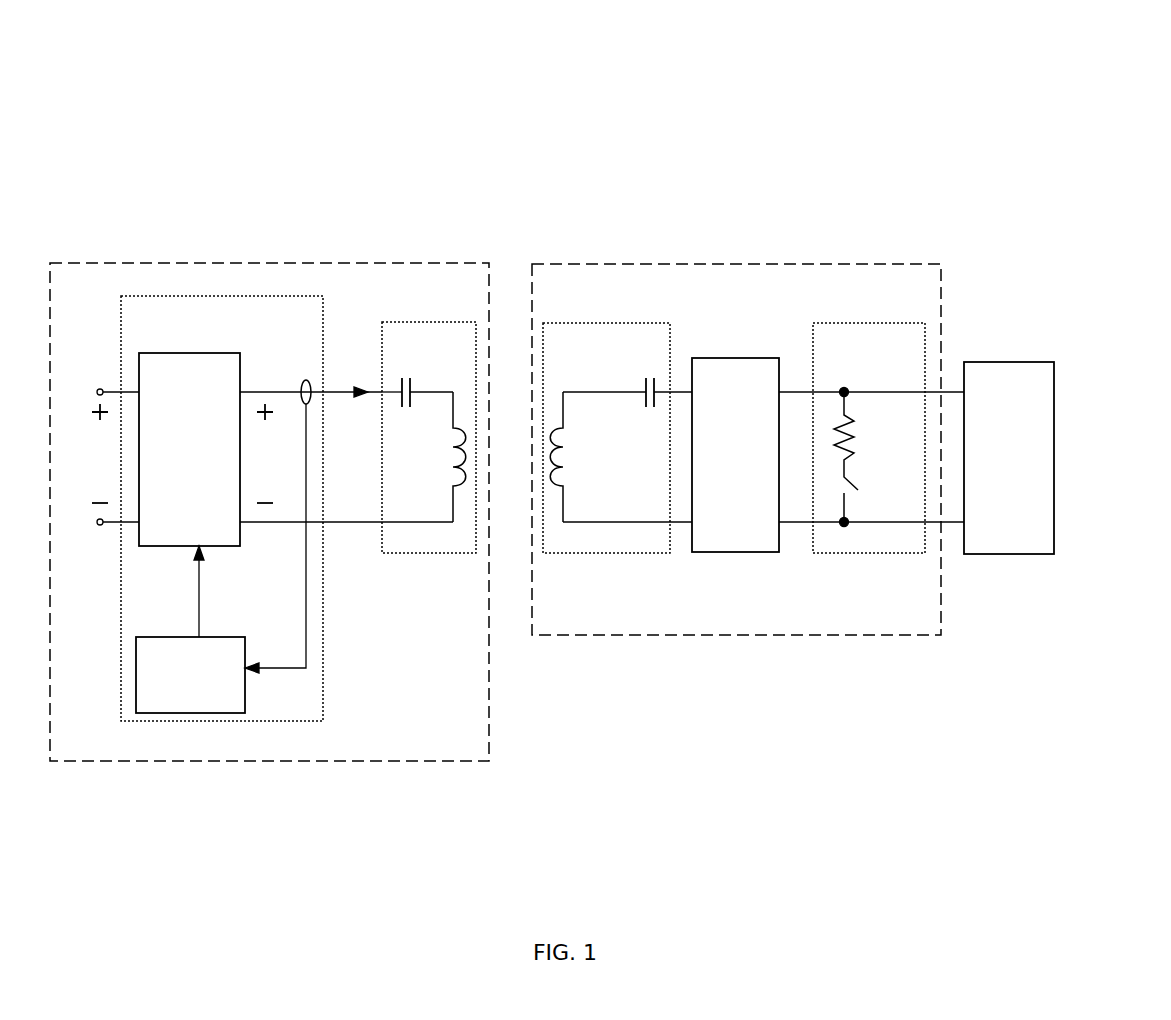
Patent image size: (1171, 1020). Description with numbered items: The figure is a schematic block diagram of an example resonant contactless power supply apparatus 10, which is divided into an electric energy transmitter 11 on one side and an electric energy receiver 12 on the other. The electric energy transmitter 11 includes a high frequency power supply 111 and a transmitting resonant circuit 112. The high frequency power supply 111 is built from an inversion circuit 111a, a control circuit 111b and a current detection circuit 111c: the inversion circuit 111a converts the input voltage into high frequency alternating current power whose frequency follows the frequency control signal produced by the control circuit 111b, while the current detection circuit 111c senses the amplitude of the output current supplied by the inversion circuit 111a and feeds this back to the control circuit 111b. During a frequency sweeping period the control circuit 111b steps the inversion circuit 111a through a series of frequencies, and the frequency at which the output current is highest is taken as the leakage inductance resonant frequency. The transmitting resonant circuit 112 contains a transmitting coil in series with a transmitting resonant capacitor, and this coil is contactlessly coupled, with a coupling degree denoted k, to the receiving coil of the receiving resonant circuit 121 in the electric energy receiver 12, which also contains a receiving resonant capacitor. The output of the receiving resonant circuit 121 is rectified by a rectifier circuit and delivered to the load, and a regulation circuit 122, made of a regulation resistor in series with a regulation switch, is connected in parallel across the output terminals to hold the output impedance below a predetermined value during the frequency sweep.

The apparatus 10 is at (1077, 78).
The electric energy transmitter 11 is at (421, 718).
The electric energy receiver 12 is at (869, 300).
The high frequency power supply 111 is at (325, 320).
The inversion circuit 111a is at (206, 352).
The control circuit 111b is at (178, 636).
The current detection circuit 111c is at (304, 379).
The transmitting resonant circuit 112 is at (412, 321).
The receiving resonant circuit 121 is at (628, 322).
The regulation circuit 122 is at (849, 555).